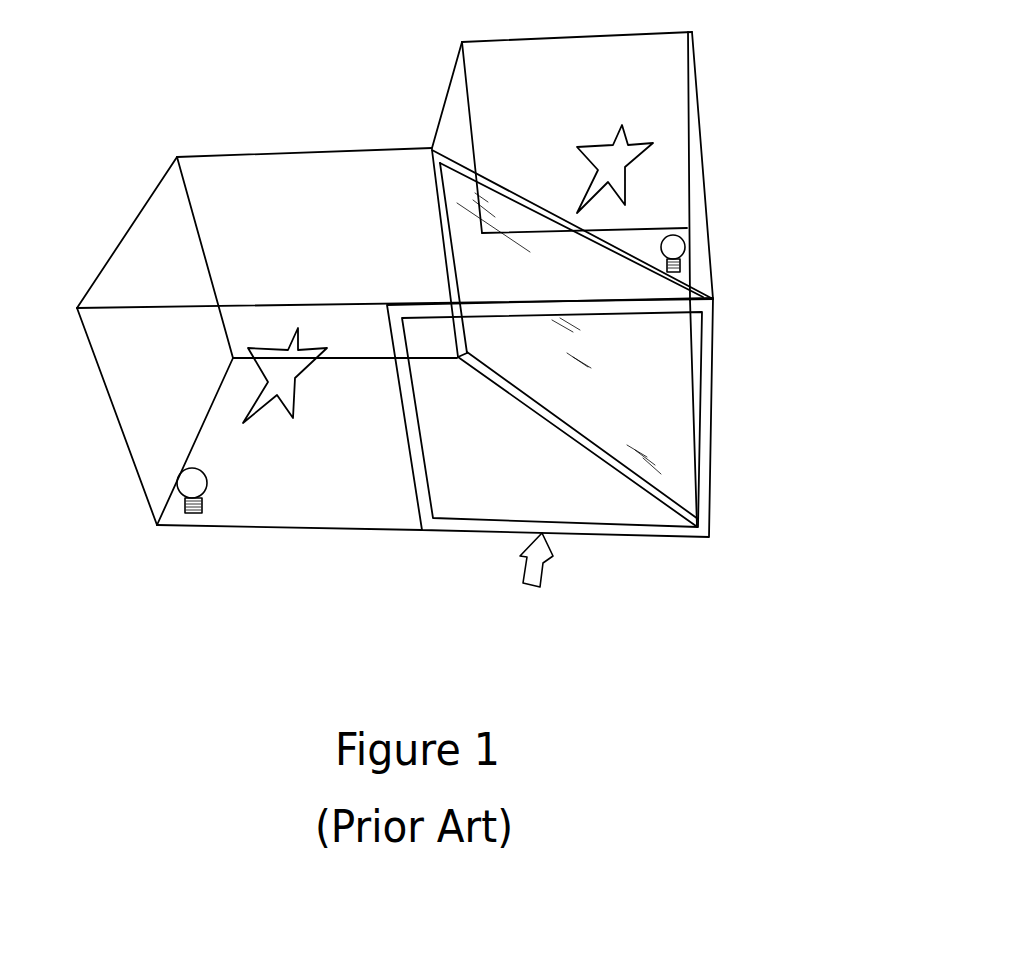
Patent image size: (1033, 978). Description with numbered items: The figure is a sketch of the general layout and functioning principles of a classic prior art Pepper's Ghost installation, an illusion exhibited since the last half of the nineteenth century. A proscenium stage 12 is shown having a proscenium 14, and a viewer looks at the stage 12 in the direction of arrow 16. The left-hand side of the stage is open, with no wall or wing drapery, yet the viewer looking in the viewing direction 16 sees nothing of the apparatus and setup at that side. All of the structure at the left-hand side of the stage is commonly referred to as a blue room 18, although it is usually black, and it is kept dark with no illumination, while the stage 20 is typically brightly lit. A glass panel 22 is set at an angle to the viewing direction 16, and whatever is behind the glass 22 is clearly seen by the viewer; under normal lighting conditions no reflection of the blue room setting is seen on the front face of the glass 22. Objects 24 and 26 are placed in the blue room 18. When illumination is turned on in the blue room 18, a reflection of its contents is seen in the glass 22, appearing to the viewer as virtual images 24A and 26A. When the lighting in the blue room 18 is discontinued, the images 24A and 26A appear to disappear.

The blue room 18 is at (273, 185).
The stage 20 is at (637, 240).
The virtual image 26A is at (628, 145).
The virtual image 24A is at (672, 245).
The proscenium 14 is at (648, 303).
The stage 12 is at (658, 387).
The glass panel 22 is at (670, 438).
The arrow 16 is at (543, 572).
The object 24 is at (275, 368).
The object 26 is at (192, 483).